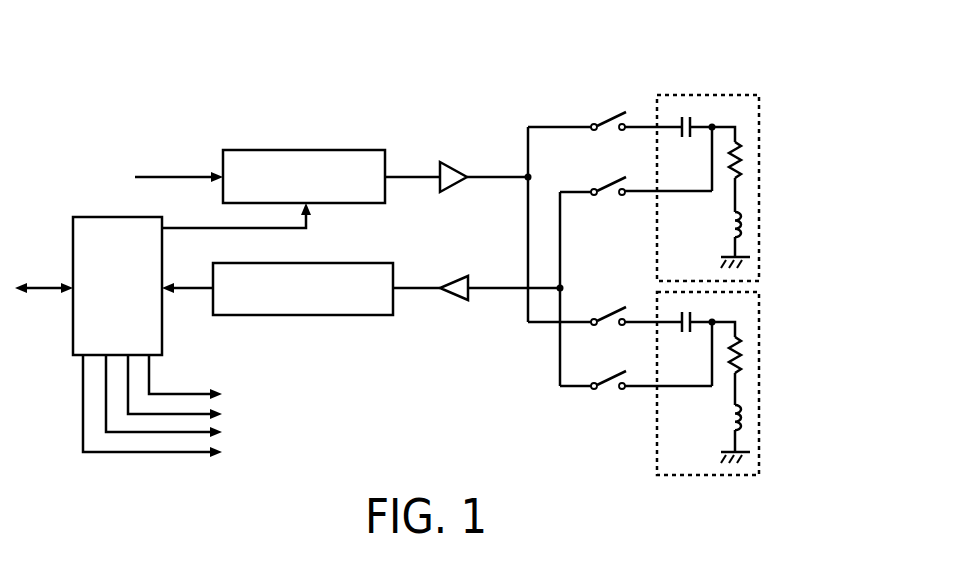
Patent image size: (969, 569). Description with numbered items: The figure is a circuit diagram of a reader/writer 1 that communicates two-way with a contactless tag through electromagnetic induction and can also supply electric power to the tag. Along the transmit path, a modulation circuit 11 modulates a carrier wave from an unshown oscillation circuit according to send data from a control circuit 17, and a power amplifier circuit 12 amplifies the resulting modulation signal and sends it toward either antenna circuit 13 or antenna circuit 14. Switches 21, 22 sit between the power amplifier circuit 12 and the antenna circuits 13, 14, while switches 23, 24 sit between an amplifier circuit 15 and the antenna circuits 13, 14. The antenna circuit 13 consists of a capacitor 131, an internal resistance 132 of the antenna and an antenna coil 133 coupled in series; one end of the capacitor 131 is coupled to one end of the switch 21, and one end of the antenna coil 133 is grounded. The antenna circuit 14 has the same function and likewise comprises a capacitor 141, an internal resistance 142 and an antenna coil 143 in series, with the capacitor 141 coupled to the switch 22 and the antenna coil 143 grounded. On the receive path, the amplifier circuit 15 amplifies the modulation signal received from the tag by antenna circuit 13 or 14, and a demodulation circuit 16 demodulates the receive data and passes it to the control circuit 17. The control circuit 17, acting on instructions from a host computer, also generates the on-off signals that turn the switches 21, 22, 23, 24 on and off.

The reader/writer 1 is at (749, 78).
The modulation circuit 11 is at (355, 149).
The power amplifier circuit 12 is at (455, 165).
The antenna circuit 13 is at (761, 137).
The antenna circuit 14 is at (761, 332).
The amplifier circuit 15 is at (455, 276).
The demodulation circuit 16 is at (357, 263).
The control circuit 17 is at (98, 217).
The switch 21 is at (602, 118).
The switch 22 is at (602, 313).
The switch 23 is at (602, 184).
The switch 24 is at (602, 378).
The capacitor 131 is at (700, 119).
The internal resistance of the antenna 132 is at (730, 160).
The antenna coil 133 is at (728, 240).
The capacitor 141 is at (700, 314).
The internal resistance of the antenna 142 is at (730, 355).
The antenna coil 143 is at (728, 434).